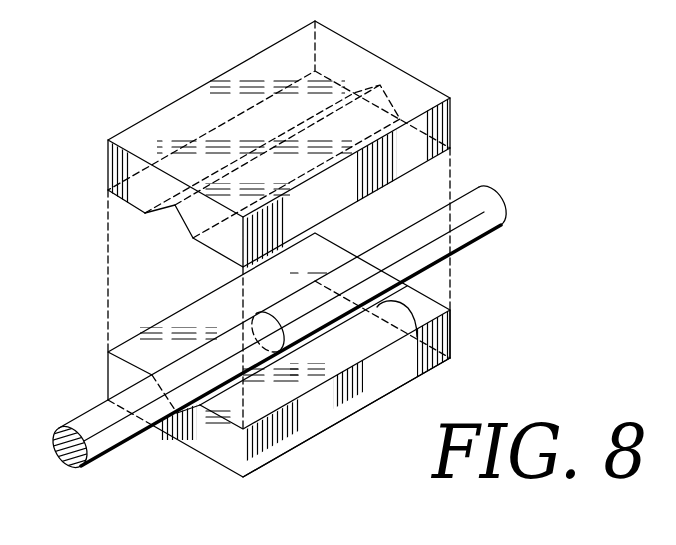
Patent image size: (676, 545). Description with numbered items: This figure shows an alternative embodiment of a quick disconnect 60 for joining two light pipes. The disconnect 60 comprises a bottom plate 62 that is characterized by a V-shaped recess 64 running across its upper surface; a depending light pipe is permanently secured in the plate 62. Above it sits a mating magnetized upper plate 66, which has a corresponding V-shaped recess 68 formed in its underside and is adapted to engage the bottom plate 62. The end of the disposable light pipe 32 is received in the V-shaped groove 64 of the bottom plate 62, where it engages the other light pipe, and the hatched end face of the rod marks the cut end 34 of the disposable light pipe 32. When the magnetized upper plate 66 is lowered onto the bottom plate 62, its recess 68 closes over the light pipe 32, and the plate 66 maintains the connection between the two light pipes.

The disposable light pipe 32 is at (278, 340).
The rod end 34 is at (110, 460).
The quick disconnect 60 is at (302, 364).
The bottom plate 62 is at (284, 454).
The V-shaped recess 64 is at (453, 330).
The magnetized upper plate 66 is at (292, 145).
The V-shaped recess 68 is at (173, 206).